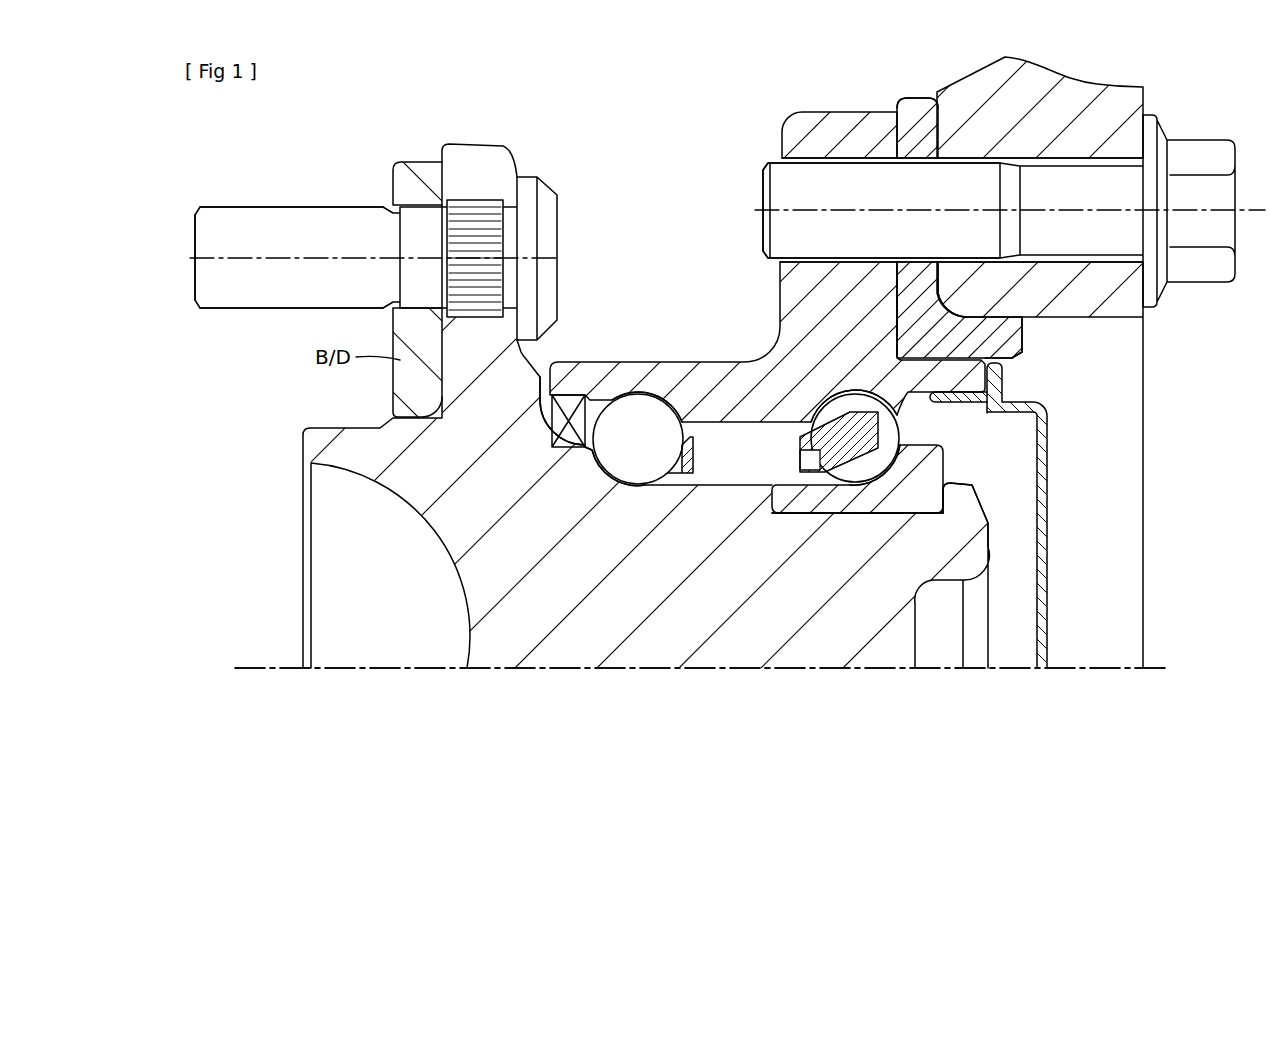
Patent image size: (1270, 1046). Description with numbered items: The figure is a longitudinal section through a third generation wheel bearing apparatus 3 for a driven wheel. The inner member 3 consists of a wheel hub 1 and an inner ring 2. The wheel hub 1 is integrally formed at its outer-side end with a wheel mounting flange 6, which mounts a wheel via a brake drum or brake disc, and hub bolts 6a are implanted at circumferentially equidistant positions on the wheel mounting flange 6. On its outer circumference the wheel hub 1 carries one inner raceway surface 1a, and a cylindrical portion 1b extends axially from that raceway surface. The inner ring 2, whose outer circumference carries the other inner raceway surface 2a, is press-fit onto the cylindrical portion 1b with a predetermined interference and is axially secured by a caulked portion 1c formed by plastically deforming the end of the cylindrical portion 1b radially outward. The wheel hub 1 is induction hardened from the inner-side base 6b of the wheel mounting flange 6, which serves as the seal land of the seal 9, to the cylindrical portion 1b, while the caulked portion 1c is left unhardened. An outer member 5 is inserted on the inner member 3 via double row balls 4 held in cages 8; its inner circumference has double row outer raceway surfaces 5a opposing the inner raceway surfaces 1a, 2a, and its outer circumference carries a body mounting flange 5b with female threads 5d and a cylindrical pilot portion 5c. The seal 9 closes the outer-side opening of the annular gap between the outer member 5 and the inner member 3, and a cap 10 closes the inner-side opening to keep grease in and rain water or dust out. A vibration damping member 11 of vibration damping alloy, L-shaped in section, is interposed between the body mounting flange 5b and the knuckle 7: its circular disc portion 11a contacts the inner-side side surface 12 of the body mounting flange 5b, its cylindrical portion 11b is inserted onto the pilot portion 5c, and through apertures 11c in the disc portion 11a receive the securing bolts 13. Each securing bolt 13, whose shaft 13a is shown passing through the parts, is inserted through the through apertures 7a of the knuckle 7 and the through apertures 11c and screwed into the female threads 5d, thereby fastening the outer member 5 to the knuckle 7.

The wheel hub 1 is at (470, 620).
The inner raceway surface 1a is at (608, 458).
The cylindrical portion 1b is at (900, 510).
The caulked portion 1c is at (968, 497).
The inner ring 2 is at (920, 510).
The inner raceway surface 2a is at (857, 480).
The inner member 3 is at (270, 573).
The rolling elements 4 is at (639, 467).
The outer member 5 is at (895, 236).
The outer raceway surfaces 5a is at (640, 410).
The body mounting flange 5b is at (818, 113).
The cylindrical pilot portion 5c is at (960, 344).
The female threads 5d is at (818, 166).
The wheel mounting flange 6 is at (488, 157).
The hub bolts 6a is at (290, 230).
The inner-side base 6b is at (547, 407).
The knuckle 7 is at (994, 337).
The through apertures 7a is at (1080, 170).
The cages 8 is at (688, 465).
The seal 9 is at (568, 392).
The cap 10 is at (1057, 591).
The vibration damping member 11 is at (976, 195).
The circular disc portion 11a is at (907, 118).
The cylindrical portion 11b is at (960, 322).
The through apertures 11c is at (925, 163).
The inner-side side surface 12 is at (889, 295).
The securing bolts 13 is at (960, 195).
The shaft of fastening bolt 13a is at (785, 236).